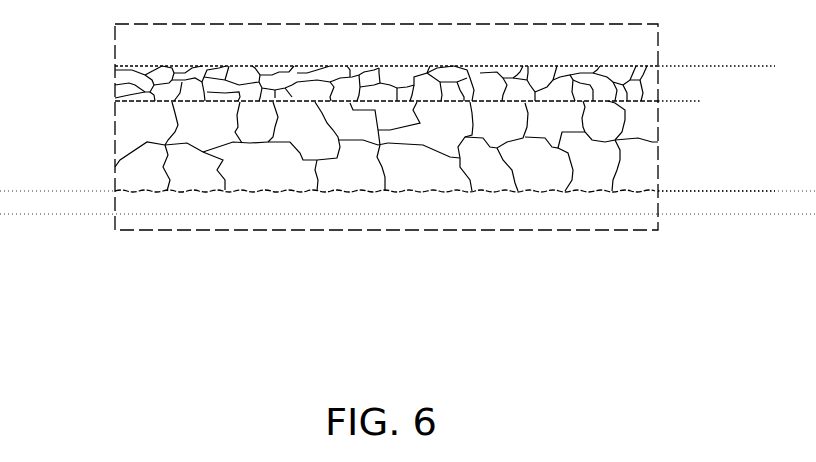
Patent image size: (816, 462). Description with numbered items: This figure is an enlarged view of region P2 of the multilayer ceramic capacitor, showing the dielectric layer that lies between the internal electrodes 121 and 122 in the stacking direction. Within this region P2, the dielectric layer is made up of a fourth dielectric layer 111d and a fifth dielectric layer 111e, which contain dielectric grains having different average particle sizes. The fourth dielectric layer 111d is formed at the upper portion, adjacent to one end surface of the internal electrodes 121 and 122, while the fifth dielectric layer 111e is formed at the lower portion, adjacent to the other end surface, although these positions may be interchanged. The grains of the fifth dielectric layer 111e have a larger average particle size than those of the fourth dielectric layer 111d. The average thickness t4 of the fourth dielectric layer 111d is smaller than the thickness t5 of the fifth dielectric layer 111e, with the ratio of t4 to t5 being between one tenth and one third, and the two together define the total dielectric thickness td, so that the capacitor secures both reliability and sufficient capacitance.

The fourth dielectric layer 111d is at (115, 64).
The fifth dielectric layer 111e is at (115, 191).
The internal electrode 121 is at (652, 42).
The internal electrode 122 is at (652, 216).
The average thickness of the fourth dielectric layer t4 is at (690, 67).
The thickness of the fifth dielectric layer t5 is at (690, 103).
The total thickness td is at (761, 67).
The region P2 is at (393, 293).